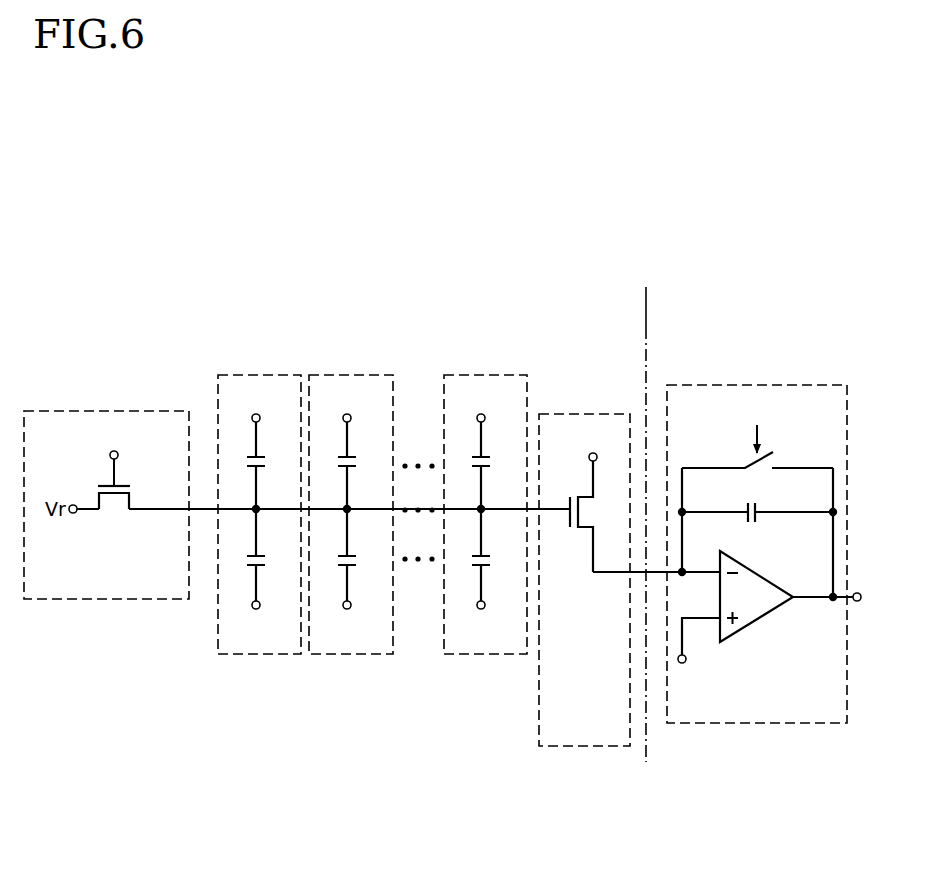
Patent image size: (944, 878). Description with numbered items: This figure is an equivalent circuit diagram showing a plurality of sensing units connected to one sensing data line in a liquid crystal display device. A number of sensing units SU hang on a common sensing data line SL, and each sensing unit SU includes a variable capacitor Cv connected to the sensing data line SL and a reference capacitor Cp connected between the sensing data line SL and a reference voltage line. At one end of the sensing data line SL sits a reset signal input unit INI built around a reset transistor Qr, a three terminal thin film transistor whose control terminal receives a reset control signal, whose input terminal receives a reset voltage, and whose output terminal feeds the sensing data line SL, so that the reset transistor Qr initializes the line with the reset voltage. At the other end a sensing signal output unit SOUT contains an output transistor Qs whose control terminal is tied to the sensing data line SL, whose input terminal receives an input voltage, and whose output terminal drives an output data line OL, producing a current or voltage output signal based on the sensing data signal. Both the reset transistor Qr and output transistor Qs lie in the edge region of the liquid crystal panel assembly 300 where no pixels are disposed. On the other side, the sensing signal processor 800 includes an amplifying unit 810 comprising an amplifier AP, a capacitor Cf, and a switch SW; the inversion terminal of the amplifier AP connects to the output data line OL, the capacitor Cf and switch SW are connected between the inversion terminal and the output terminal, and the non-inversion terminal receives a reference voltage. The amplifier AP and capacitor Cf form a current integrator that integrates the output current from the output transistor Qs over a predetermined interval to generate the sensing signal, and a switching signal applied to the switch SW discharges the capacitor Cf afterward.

The liquid crystal panel assembly 300 is at (646, 302).
The sensing signal processor 800 is at (697, 317).
The amplifying unit 810 is at (757, 385).
The reset signal input unit INI is at (108, 411).
The sensing data line SL is at (200, 509).
The sensing unit SU is at (263, 375).
The sensing signal output unit SOUT is at (578, 414).
The output data line OL is at (589, 572).
The reset transistor Qr is at (114, 510).
The output transistor Qs is at (595, 516).
The variable capacitor Cv is at (270, 463).
The reference capacitor Cp is at (270, 563).
The capacitor Cf is at (757, 503).
The switch SW is at (757, 458).
The amplifier AP is at (758, 620).